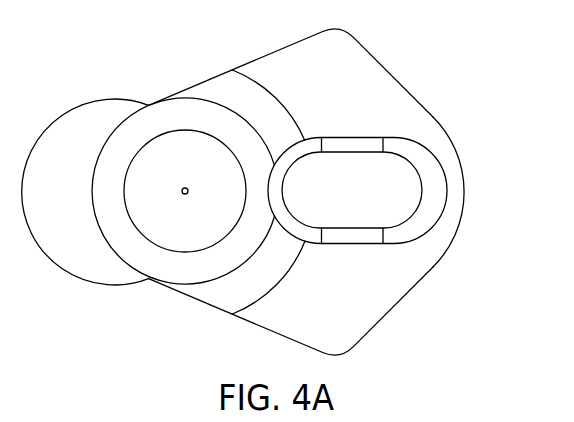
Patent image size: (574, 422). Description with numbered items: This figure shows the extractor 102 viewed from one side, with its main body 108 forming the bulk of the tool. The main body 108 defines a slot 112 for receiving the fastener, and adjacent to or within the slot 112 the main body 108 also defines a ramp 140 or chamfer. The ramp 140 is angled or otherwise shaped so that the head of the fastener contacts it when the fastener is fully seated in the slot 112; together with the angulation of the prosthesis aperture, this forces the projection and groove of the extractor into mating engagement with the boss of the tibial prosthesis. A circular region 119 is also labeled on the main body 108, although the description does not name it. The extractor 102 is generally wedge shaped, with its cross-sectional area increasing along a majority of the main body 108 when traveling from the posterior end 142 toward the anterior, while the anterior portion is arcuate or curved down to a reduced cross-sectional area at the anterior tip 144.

The extractor 102 is at (183, 49).
The main body 108 is at (305, 68).
The slot 112 is at (407, 137).
The circular boss 119 is at (133, 138).
The ramp 140 is at (307, 235).
The posterior end 142 is at (91, 189).
The anterior tip 144 is at (464, 190).